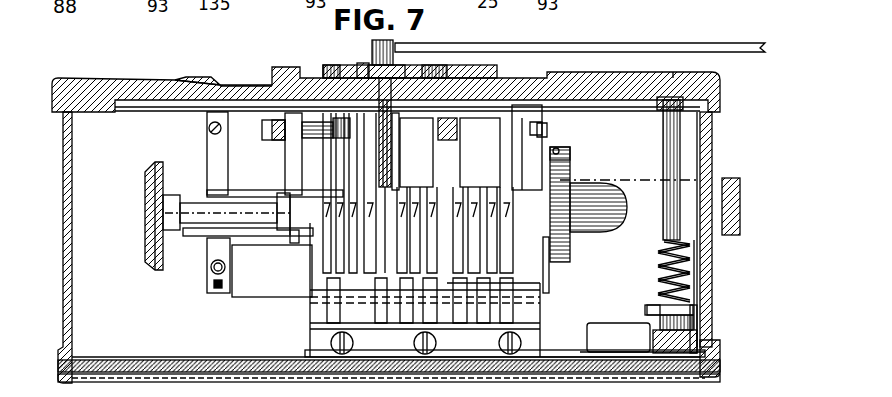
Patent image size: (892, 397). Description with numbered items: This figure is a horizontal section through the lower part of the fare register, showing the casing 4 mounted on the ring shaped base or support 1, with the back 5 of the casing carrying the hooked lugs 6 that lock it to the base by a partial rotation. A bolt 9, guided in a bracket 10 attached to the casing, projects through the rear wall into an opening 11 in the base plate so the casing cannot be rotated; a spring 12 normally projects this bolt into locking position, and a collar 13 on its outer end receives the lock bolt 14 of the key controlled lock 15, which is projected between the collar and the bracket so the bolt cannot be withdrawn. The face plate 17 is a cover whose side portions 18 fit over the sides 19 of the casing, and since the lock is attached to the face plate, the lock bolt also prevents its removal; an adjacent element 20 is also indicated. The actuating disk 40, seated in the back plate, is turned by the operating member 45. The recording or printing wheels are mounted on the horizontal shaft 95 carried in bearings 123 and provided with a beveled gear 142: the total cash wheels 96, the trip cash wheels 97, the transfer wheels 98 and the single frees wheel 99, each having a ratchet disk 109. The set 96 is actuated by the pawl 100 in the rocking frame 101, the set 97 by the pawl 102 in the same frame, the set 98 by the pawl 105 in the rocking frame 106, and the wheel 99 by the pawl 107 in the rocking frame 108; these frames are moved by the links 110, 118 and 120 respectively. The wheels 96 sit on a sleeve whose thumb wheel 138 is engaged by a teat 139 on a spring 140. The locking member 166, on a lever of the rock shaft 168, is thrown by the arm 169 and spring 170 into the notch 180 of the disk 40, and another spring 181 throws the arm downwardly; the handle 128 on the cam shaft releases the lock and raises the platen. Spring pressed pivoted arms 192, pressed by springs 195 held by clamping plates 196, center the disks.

The ring shaped base or support 1 is at (125, 80).
The casing 4 is at (70, 185).
The back 5 is at (248, 87).
The hooked lugs 6 is at (190, 78).
The bolt 9 is at (663, 133).
The guide bracket 10 is at (662, 318).
The opening 11 is at (693, 77).
The spring 12 is at (660, 255).
The collar 13 is at (705, 320).
The lock bolt 14 is at (712, 342).
The key controlled lock 15 is at (642, 337).
The face plate 17 is at (558, 360).
The side portions 18 is at (710, 278).
The sides 19 is at (712, 253).
The collar 20 is at (710, 318).
The actuating disk 40 is at (305, 78).
The operating member 45 is at (548, 50).
The horizontal shaft 95 is at (190, 202).
The total cash printing wheels 96 is at (507, 257).
The trip cash printing wheels 97 is at (440, 327).
The transfer printing wheels 98 is at (323, 262).
The frees printing wheel 99 is at (362, 327).
The pawl 100 is at (480, 152).
The rocking frame 101 is at (515, 196).
The pawl 102 is at (419, 152).
The pawl 105 is at (340, 122).
The rocking frame 106 is at (345, 140).
The pawl 107 is at (407, 104).
The rocking frame 108 is at (372, 118).
The ratchet disk 109 is at (360, 282).
The link 110 is at (450, 123).
The link 118 is at (268, 140).
The link 120 is at (390, 92).
The bearings 123 is at (290, 240).
The handle 128 is at (740, 205).
The thumb wheel 138 is at (570, 253).
The teat 139 is at (570, 160).
The spring 140 is at (560, 146).
The beveled gear 142 is at (150, 230).
The locking member 166 is at (372, 45).
The rock shaft 168 is at (204, 118).
The arm 169 is at (213, 285).
The spring 170 is at (210, 267).
The notch 180 is at (387, 100).
The spring 181 is at (212, 153).
The spring pressed pivoted arm 192 is at (627, 299).
The springs 195 is at (549, 306).
The clamping plates 196 is at (481, 357).